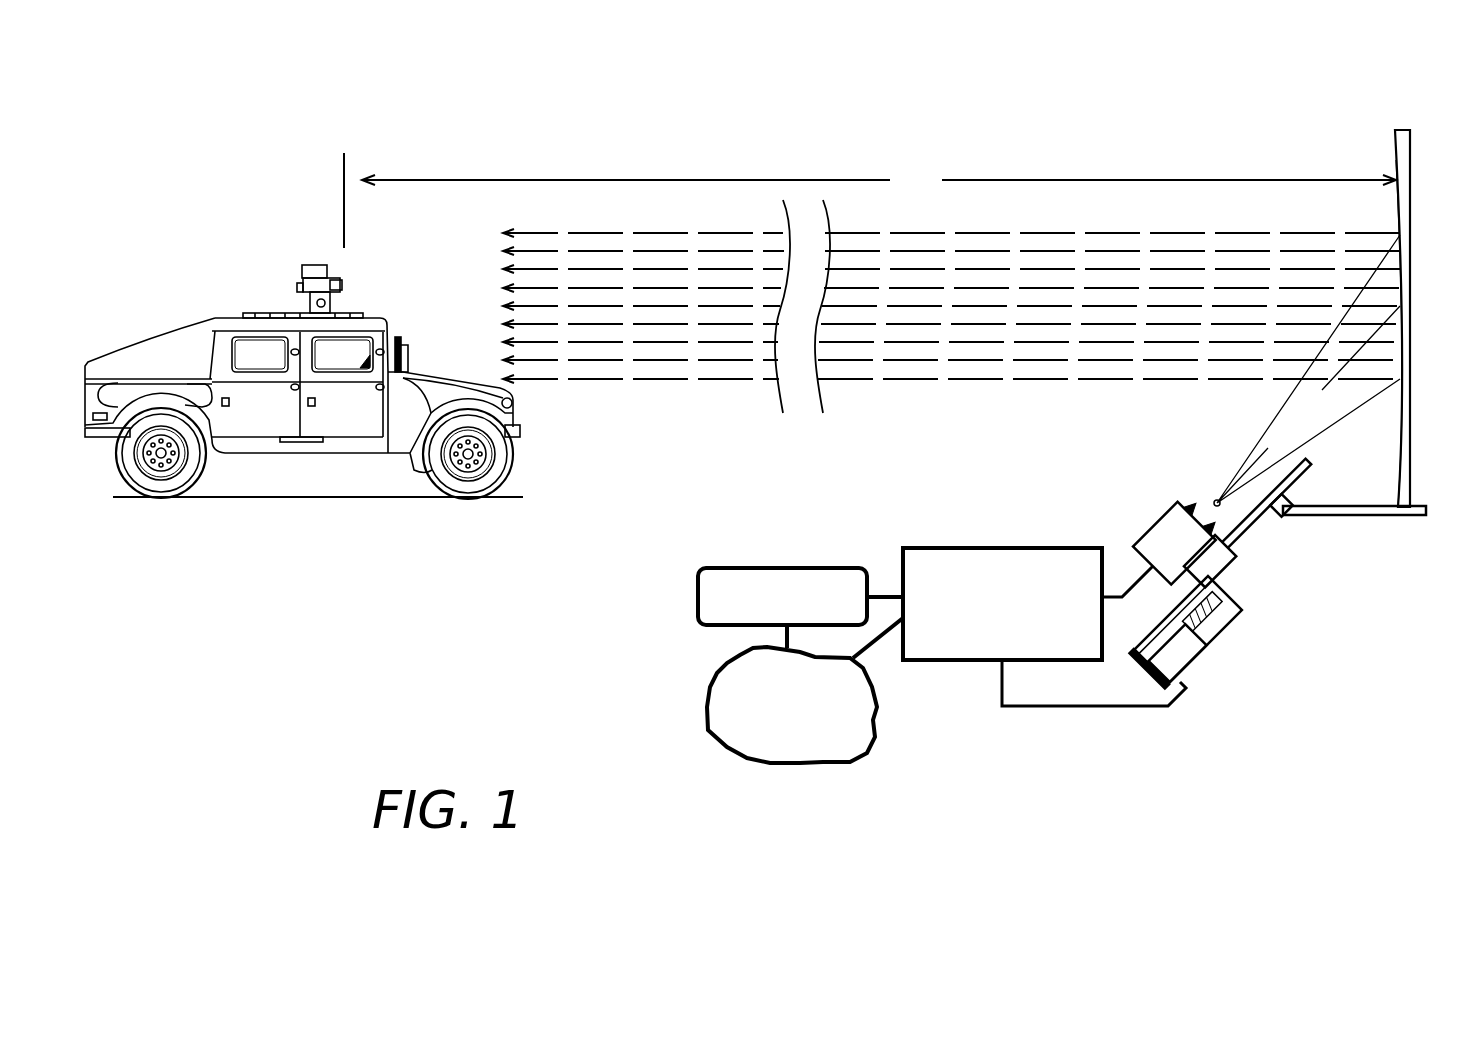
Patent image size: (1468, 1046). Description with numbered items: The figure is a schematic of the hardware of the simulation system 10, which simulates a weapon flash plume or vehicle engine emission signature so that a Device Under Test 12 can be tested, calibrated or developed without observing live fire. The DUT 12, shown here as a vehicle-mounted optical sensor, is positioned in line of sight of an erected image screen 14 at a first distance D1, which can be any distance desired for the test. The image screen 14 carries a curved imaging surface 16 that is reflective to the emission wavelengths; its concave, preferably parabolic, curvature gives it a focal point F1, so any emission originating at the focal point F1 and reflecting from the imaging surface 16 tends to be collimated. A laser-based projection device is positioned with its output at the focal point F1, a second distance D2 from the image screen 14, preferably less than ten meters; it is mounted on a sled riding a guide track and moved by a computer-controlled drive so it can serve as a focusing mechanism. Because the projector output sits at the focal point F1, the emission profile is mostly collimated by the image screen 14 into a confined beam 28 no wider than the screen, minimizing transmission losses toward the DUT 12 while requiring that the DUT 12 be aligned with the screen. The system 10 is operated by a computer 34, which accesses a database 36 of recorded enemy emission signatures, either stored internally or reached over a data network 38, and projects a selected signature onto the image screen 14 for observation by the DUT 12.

The simulation system 10 is at (1143, 165).
The Device Under Test (DUT) 12 is at (309, 264).
The image screen 14 is at (1410, 147).
The imaging surface 16 is at (1395, 157).
The confined beam 28 is at (997, 378).
The computer 34 is at (1037, 548).
The database 36 is at (797, 565).
The data network 38 is at (765, 763).
The first distance D1 is at (879, 182).
The second distance D2 is at (1308, 369).
The focal point F1 is at (1216, 495).